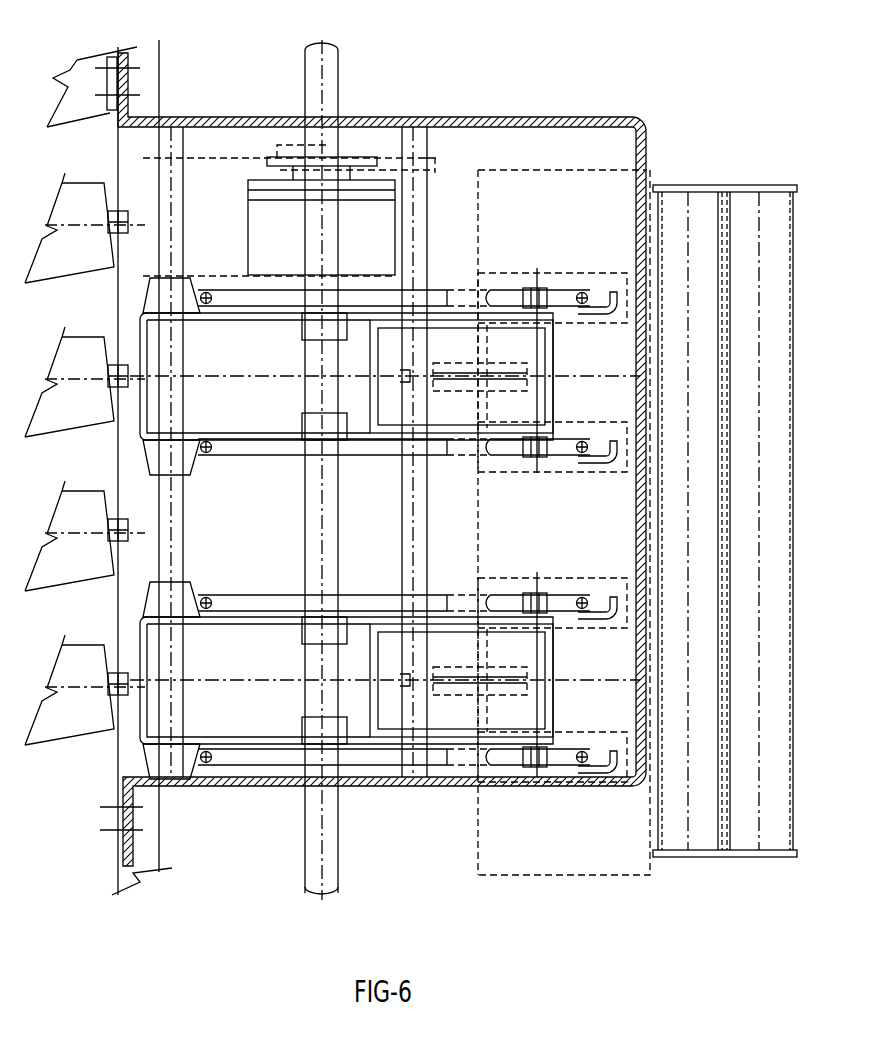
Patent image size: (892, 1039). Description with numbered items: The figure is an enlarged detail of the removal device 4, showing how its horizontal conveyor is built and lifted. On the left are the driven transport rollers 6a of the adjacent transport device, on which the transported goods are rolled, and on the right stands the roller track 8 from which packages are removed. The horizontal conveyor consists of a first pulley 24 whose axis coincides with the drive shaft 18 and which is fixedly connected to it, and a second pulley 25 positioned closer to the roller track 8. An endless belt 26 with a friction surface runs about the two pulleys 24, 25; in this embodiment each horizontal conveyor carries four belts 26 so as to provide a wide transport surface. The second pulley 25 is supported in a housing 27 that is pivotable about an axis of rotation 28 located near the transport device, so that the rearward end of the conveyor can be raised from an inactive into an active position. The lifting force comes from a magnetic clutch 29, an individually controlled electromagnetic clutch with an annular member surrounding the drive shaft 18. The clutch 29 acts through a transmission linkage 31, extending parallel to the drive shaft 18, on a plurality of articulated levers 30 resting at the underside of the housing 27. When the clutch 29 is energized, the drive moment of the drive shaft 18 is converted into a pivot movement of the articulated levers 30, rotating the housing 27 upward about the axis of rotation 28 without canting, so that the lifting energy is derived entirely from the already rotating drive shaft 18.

The removal device 4 is at (622, 103).
The driven transport rollers 6a is at (77, 723).
The roller track 8 is at (707, 175).
The drive shaft 18 is at (332, 72).
The first pulley 24 is at (260, 765).
The second pulley 25 is at (575, 767).
The endless belt 26 is at (463, 295).
The housing 27 is at (585, 436).
The axis of rotation 28 is at (168, 310).
The magnetic clutch 29 is at (248, 212).
The articulated lever 30 is at (519, 374).
The transmission linkage 31 is at (417, 503).